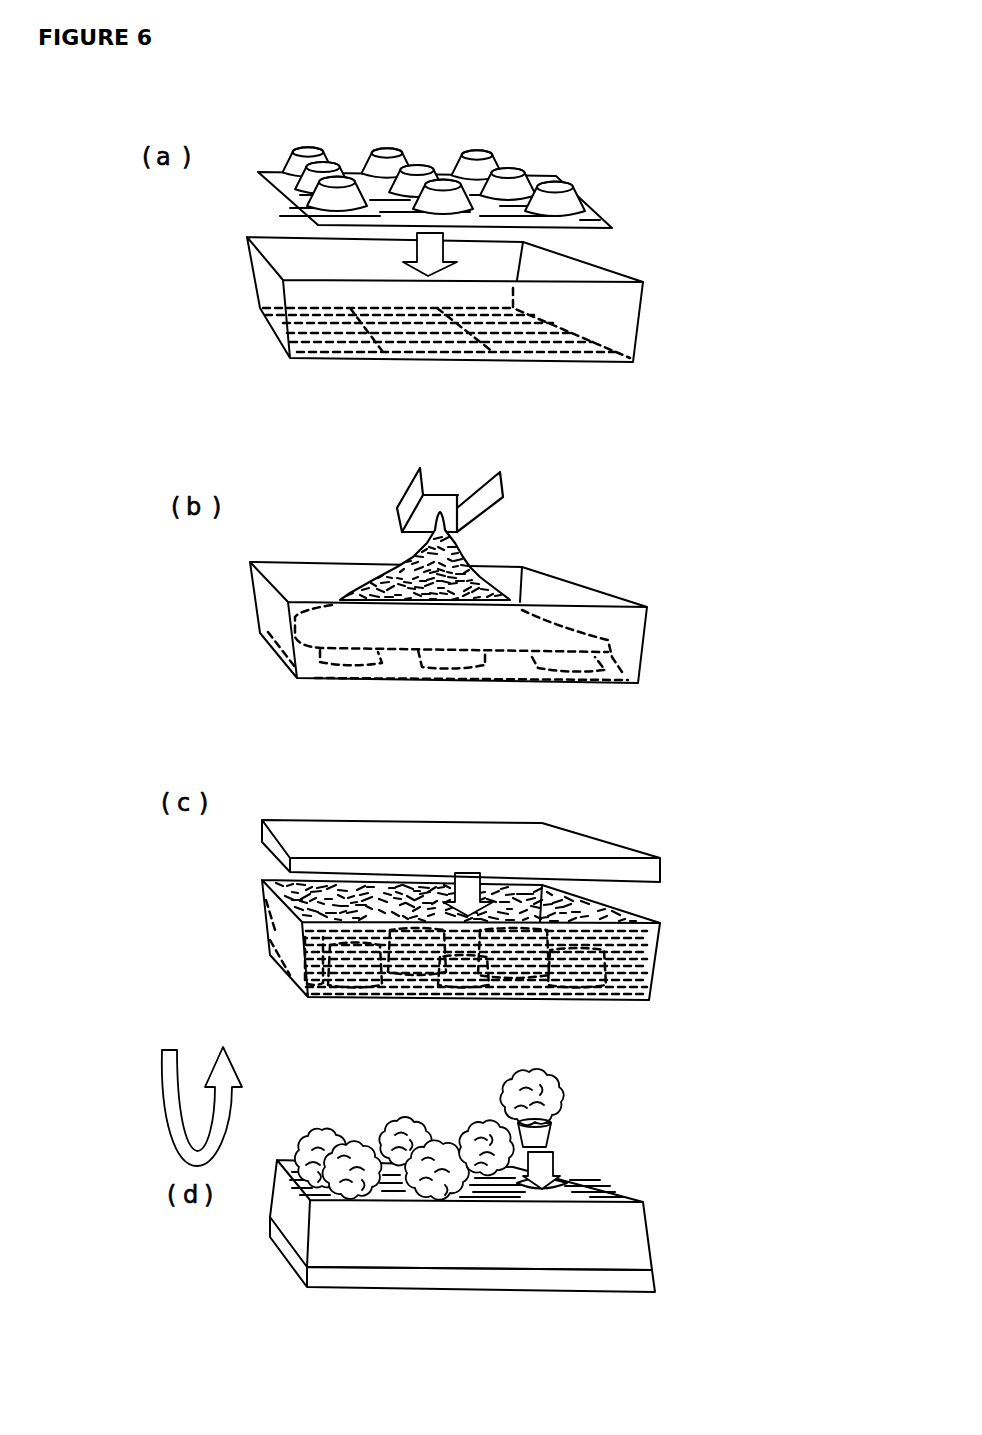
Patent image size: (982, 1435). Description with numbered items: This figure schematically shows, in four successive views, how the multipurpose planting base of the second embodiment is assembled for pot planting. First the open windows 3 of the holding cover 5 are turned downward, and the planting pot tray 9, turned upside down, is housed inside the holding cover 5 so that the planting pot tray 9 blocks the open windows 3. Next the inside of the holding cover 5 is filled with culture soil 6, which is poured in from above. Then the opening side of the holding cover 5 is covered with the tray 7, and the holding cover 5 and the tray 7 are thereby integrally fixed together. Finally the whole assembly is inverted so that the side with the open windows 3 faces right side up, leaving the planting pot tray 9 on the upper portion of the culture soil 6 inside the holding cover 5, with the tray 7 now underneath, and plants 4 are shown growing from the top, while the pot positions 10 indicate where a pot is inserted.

The open windows 3 is at (437, 347).
The plants 4 is at (400, 1123).
The holding cover 5 is at (627, 325).
The culture soil 6 is at (460, 560).
The tray 7 is at (577, 845).
The planting pot tray 9 is at (600, 210).
The cup protrusions 10 is at (577, 198).